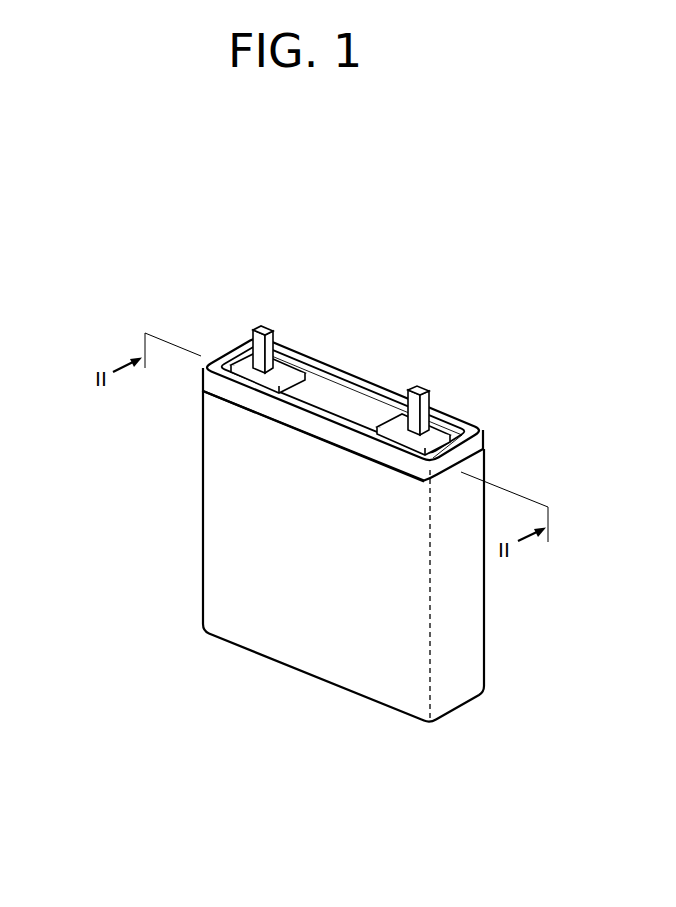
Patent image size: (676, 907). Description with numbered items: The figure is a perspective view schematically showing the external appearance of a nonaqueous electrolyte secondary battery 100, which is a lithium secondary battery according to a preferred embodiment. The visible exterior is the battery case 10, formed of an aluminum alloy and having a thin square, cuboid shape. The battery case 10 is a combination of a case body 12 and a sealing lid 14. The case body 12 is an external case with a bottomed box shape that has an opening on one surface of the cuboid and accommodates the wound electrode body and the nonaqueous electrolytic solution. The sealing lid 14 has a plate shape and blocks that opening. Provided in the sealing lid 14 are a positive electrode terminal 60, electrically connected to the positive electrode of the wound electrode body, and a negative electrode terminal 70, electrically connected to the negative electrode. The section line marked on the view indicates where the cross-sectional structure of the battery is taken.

The nonaqueous electrolyte secondary battery 100 is at (98, 254).
The battery case 10 is at (317, 641).
The case body 12 is at (392, 677).
The sealing lid 14 is at (235, 353).
The positive electrode terminal 60 is at (263, 323).
The negative electrode terminal 70 is at (423, 385).